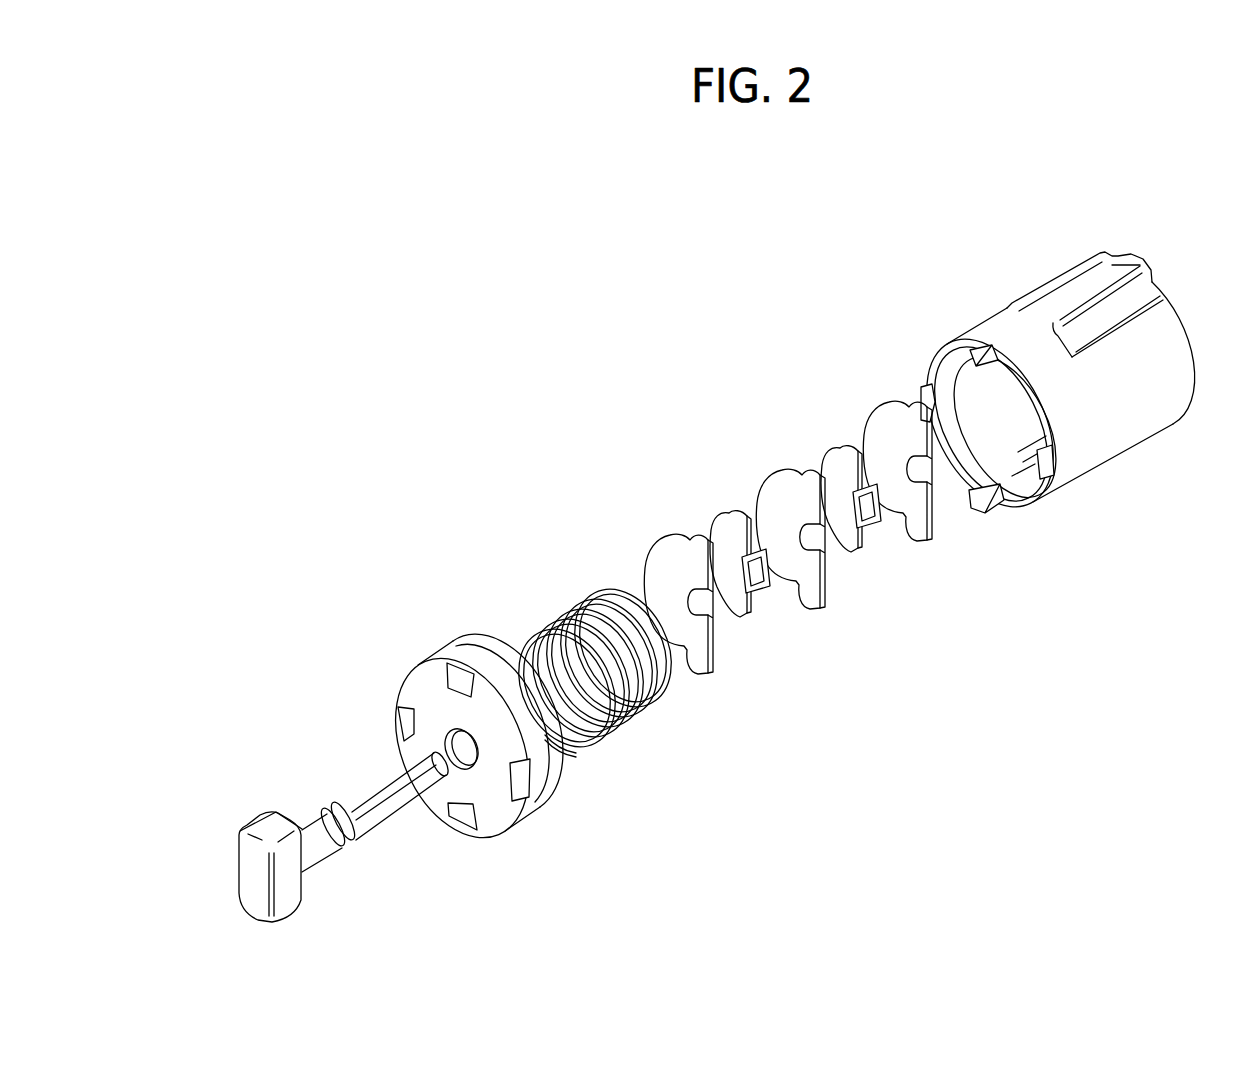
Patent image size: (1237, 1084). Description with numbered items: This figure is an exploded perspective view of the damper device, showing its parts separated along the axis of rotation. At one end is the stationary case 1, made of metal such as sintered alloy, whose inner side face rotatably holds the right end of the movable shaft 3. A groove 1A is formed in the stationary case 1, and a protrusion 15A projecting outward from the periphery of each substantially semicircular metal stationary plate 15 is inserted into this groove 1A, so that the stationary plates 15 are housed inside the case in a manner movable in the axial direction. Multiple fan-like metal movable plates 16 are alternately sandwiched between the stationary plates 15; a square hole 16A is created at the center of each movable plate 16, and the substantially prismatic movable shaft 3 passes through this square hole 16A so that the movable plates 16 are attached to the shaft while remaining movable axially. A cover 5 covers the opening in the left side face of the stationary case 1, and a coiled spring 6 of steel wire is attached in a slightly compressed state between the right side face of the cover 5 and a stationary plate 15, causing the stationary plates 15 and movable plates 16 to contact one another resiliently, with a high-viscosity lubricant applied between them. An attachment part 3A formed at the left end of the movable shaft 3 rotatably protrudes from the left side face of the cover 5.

The stationary case 1 is at (1080, 478).
The groove 1A is at (1082, 288).
The movable shaft 3 is at (385, 818).
The attachment part 3A is at (270, 822).
The cover 5 is at (430, 692).
The coiled spring 6 is at (560, 613).
The stationary plates 15 is at (767, 503).
The protrusion 15A is at (800, 482).
The movable plates 16 is at (858, 522).
The square hole 16A is at (872, 530).